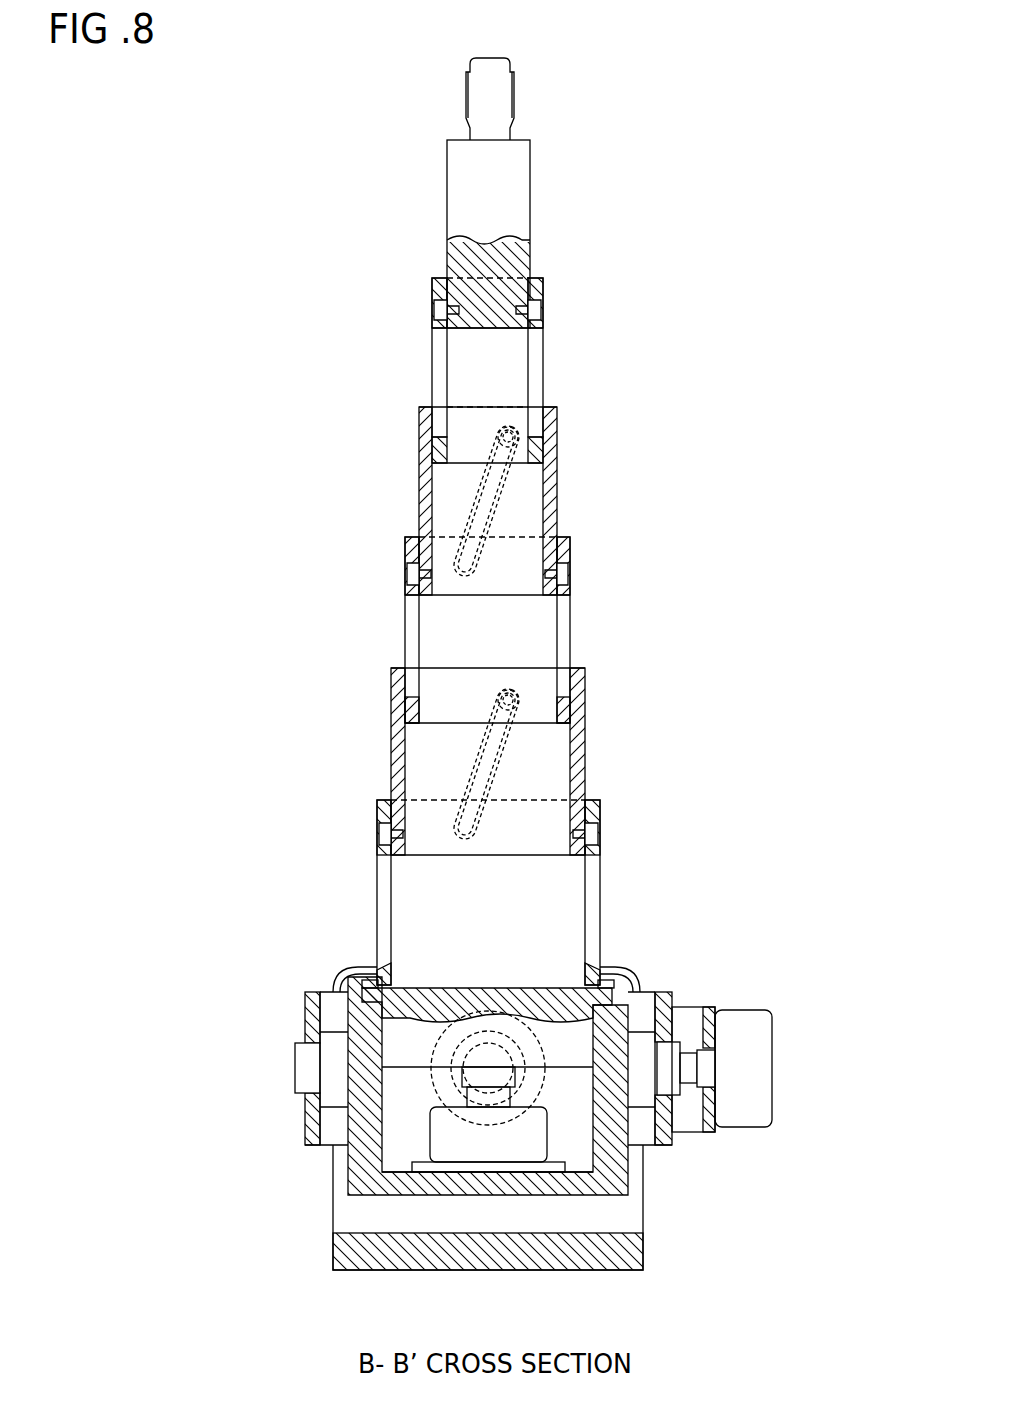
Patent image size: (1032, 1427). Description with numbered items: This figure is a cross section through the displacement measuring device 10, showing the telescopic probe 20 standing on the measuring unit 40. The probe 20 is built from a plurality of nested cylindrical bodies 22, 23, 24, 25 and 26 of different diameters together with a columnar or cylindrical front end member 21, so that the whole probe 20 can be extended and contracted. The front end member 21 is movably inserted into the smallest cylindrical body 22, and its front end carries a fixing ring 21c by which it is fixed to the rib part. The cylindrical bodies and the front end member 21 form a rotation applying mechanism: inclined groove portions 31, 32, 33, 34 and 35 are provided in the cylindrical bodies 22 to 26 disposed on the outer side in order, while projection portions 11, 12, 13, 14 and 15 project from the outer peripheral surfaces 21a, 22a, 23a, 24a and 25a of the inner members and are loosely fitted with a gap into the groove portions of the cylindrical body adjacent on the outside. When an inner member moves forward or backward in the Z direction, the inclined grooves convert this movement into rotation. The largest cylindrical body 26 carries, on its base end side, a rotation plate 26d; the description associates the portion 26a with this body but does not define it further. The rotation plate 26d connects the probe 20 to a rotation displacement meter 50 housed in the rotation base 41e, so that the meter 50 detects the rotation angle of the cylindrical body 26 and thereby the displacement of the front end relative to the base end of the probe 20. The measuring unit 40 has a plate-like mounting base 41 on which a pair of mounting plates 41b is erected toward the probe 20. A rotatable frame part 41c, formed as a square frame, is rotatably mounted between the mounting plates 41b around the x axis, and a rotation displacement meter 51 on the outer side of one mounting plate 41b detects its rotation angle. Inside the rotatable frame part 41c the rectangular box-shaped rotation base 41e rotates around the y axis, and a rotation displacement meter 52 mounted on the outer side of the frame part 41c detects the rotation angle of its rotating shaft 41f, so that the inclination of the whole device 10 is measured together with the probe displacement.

The displacement measuring device 10 is at (240, 293).
The projection portion 11 is at (438, 306).
The projection portion 12 is at (498, 437).
The projection portion 13 is at (413, 571).
The projection portion 14 is at (498, 700).
The projection portion 15 is at (385, 834).
The probe 20 is at (345, 402).
The front end member 21 is at (548, 222).
The outer peripheral surface 21a is at (532, 186).
The fixing ring 21c is at (505, 94).
The cylindrical body 22 is at (568, 363).
The outer peripheral surface 22a is at (546, 325).
The cylindrical body 23 is at (578, 500).
The outer peripheral surface 23a is at (556, 462).
The cylindrical body 24 is at (592, 624).
The outer peripheral surface 24a is at (572, 585).
The cylindrical body 25 is at (608, 762).
The outer peripheral surface 25a is at (587, 722).
The cylindrical body 26 is at (622, 886).
The sixth stage tube upper end plate 26a is at (602, 845).
The rotation plate 26d is at (345, 1004).
The inclined groove portion 31 is at (440, 356).
The inclined groove portion 32 is at (470, 492).
The inclined groove portion 33 is at (415, 631).
The inclined groove portion 34 is at (470, 750).
The inclined groove portion 35 is at (385, 894).
The measuring unit 40 is at (825, 1005).
The mounting base 41 is at (333, 1253).
The mounting plate 41b is at (347, 1215).
The rotatable frame part 41c is at (310, 1123).
The rotation base 41e is at (392, 1185).
The rotating shaft 41f is at (643, 1093).
The rotation displacement meter 50 is at (490, 1150).
The rotation displacement meter 51 is at (543, 1072).
The rotation displacement meter 52 is at (746, 1005).